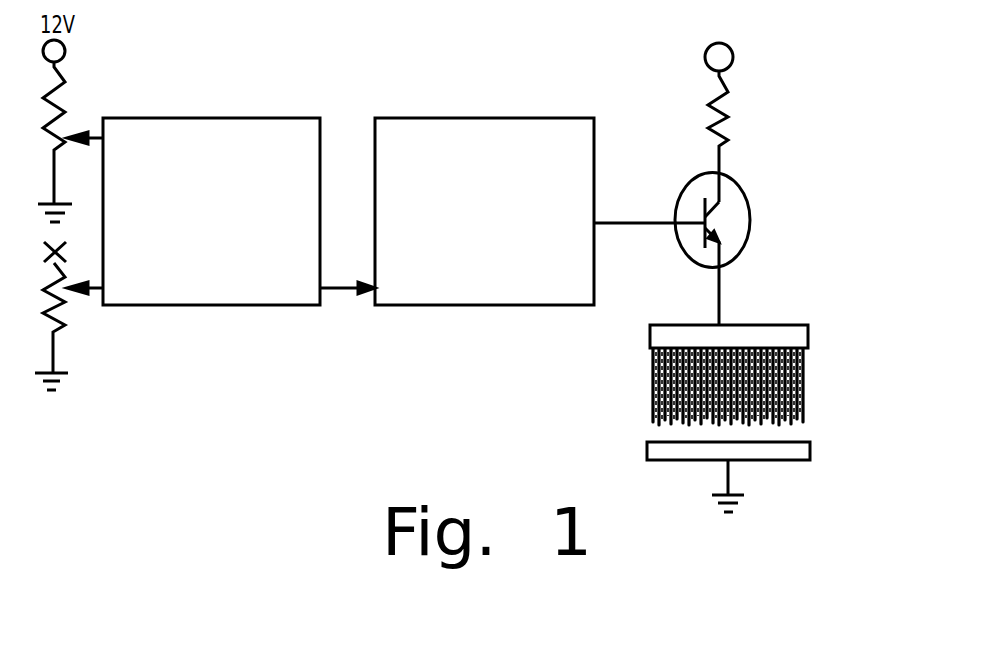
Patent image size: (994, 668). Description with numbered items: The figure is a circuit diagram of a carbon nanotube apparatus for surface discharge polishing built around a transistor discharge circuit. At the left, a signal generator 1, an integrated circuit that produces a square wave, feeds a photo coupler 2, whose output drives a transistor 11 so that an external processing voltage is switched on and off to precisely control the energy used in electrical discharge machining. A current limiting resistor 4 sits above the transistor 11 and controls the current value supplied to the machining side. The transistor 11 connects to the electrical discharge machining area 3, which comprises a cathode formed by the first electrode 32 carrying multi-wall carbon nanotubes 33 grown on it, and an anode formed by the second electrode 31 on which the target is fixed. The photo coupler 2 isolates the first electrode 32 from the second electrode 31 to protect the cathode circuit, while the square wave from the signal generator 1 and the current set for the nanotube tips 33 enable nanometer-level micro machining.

The signal generator 1 is at (213, 280).
The photo coupler 2 is at (475, 138).
The electrical discharge machining area 3 is at (719, 432).
The current limiting resistor 4 is at (729, 114).
The transistor 11 is at (737, 217).
The second electrode 31 is at (647, 453).
The first electrode 32 is at (662, 340).
The multi-wall carbon nanotubes 33 is at (807, 375).